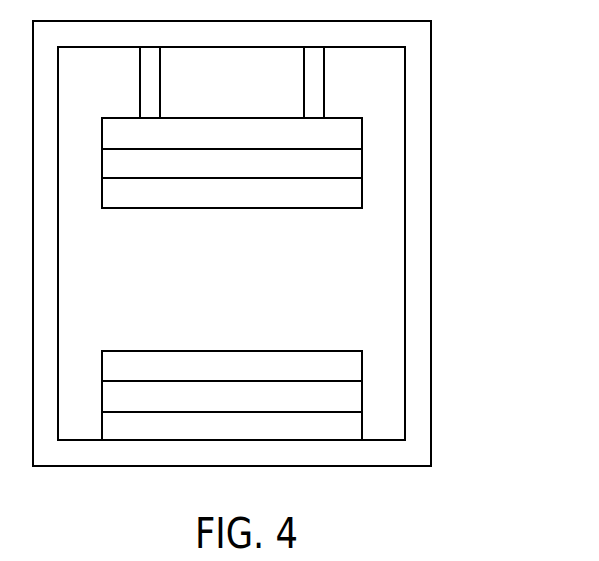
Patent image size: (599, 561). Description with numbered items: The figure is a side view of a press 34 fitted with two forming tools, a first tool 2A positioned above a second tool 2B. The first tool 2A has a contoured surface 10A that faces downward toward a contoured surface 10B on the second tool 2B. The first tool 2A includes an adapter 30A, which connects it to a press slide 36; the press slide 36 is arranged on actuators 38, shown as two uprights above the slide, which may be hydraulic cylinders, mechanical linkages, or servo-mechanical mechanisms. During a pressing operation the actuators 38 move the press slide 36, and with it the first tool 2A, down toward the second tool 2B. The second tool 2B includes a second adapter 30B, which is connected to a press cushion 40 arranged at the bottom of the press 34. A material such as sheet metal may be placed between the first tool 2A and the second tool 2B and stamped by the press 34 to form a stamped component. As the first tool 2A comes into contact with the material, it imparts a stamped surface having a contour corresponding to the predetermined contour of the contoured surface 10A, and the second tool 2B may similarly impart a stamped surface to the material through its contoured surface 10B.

The press 34 is at (504, 176).
The press slide 36 is at (355, 138).
The actuators 38 is at (148, 83).
The contoured surface 10A is at (244, 212).
The adapter 30A is at (112, 163).
The first tool 2A is at (353, 188).
The contoured surface 10B is at (209, 346).
The second tool 2B is at (357, 365).
The second adapter 30B is at (115, 395).
The press cushion 40 is at (353, 425).